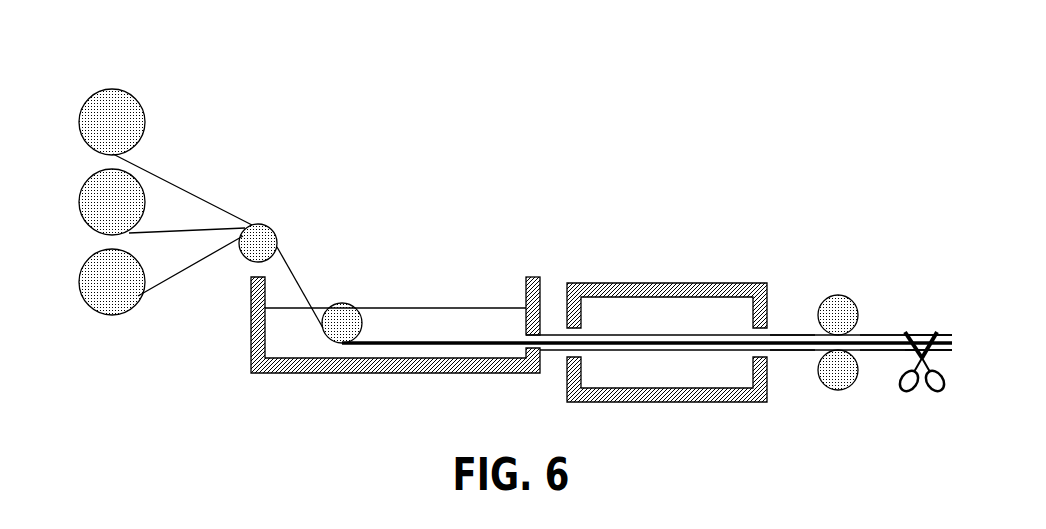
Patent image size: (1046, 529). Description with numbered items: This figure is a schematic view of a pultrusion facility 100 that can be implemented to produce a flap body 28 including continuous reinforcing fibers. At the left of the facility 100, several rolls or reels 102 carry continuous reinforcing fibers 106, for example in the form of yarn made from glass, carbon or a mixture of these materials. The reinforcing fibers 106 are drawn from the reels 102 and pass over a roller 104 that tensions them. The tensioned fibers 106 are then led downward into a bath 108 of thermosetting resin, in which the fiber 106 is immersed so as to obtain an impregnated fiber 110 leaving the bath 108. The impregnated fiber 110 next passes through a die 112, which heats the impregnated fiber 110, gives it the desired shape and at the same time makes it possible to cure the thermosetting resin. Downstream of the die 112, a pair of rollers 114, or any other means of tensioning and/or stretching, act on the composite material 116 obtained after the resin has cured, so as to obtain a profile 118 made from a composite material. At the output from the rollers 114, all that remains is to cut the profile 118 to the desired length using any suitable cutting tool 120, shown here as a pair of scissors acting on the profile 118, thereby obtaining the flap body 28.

The pultrusion facility 100 is at (573, 191).
The rolls or reels 102 is at (128, 93).
The roller 104 is at (351, 305).
The continuous reinforcing fibers 106 is at (192, 260).
The bath of resin 108 is at (455, 307).
The impregnated fiber 110 is at (550, 334).
The die 112 is at (720, 283).
The rollers 114 is at (839, 294).
The composite material 116 is at (792, 333).
The profile 118 is at (885, 333).
The cutting tool 120 is at (903, 350).
The flap body 28 is at (920, 350).